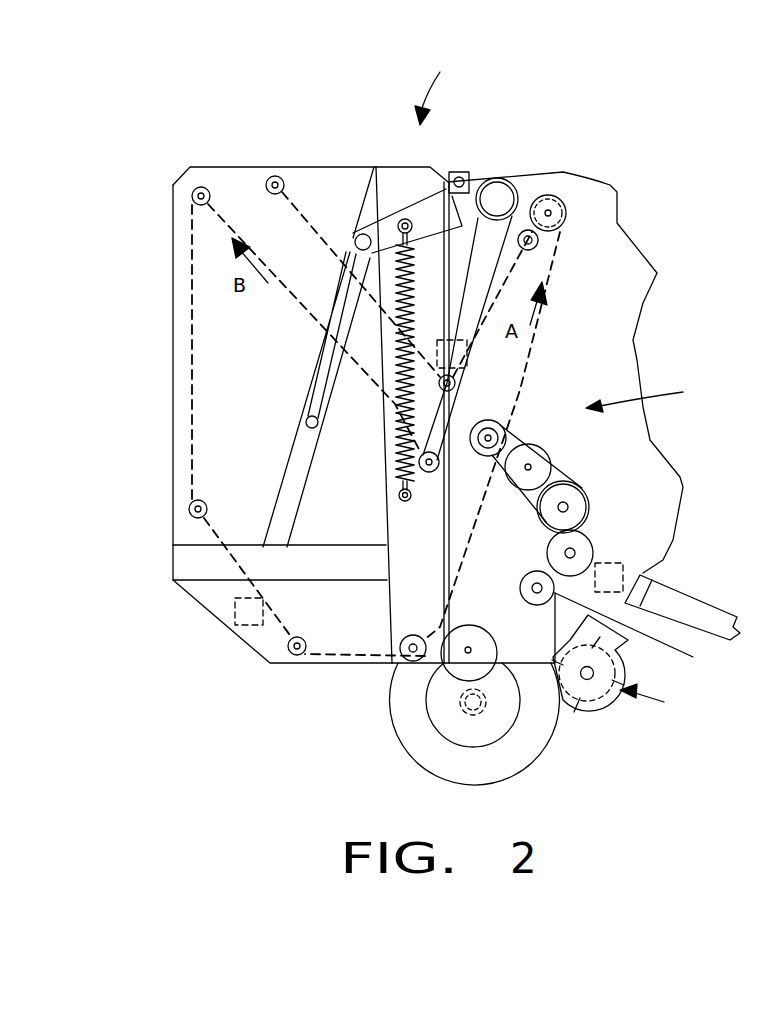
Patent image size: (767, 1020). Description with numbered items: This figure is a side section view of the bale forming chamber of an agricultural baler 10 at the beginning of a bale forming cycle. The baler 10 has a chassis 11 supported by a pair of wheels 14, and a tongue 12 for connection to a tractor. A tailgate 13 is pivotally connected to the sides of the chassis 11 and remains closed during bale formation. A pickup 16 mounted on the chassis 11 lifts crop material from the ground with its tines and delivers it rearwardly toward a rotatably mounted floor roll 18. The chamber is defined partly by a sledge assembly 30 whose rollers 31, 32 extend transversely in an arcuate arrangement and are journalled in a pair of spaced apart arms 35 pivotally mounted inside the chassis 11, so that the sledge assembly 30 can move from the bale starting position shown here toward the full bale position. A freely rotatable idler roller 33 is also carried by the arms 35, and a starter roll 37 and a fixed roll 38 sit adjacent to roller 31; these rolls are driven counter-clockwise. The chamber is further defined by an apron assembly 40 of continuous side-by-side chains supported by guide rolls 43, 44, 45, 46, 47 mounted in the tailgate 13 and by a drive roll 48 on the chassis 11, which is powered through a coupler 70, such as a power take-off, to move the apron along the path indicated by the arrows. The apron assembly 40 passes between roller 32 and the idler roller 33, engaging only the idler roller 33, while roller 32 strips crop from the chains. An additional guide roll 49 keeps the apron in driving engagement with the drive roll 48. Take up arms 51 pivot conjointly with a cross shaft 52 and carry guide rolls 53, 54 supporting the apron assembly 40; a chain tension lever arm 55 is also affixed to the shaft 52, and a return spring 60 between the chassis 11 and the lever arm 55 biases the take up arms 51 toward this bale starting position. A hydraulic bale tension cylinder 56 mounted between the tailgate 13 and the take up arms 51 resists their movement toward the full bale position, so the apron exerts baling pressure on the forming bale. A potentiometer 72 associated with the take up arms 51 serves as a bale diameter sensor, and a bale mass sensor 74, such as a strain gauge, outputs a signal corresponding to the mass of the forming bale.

The agricultural baler 10 is at (433, 87).
The chassis 11 is at (522, 642).
The tongue 12 is at (693, 600).
The tailgate 13 is at (170, 253).
The wheels 14 is at (400, 742).
The pickup 16 is at (624, 664).
The floor roll 18 is at (457, 677).
The sledge assembly 30 is at (648, 395).
The roller 31 is at (587, 495).
The roller 32 is at (551, 455).
The idler roller 33 is at (500, 428).
The arms 35 is at (542, 496).
The starter roll 37 is at (641, 630).
The fixed roll 38 is at (590, 543).
The apron assembly 40 is at (185, 360).
The guide roll 43 is at (275, 176).
The guide roll 44 is at (200, 185).
The guide roll 45 is at (190, 513).
The guide roll 46 is at (290, 650).
The guide roll 47 is at (405, 657).
The drive roll 48 is at (552, 197).
The additional guide roll 49 is at (535, 248).
The take up arms 51 is at (500, 232).
The cross shaft 52 is at (486, 179).
The guide roll 53 is at (432, 472).
The guide roll 54 is at (456, 383).
The chain tension lever arm 55 is at (422, 200).
The bale tension cylinder 56 is at (312, 405).
The return spring 60 is at (400, 455).
The coupler 70 is at (623, 563).
The potentiometer 72 is at (467, 355).
The bale mass sensor 74 is at (235, 602).